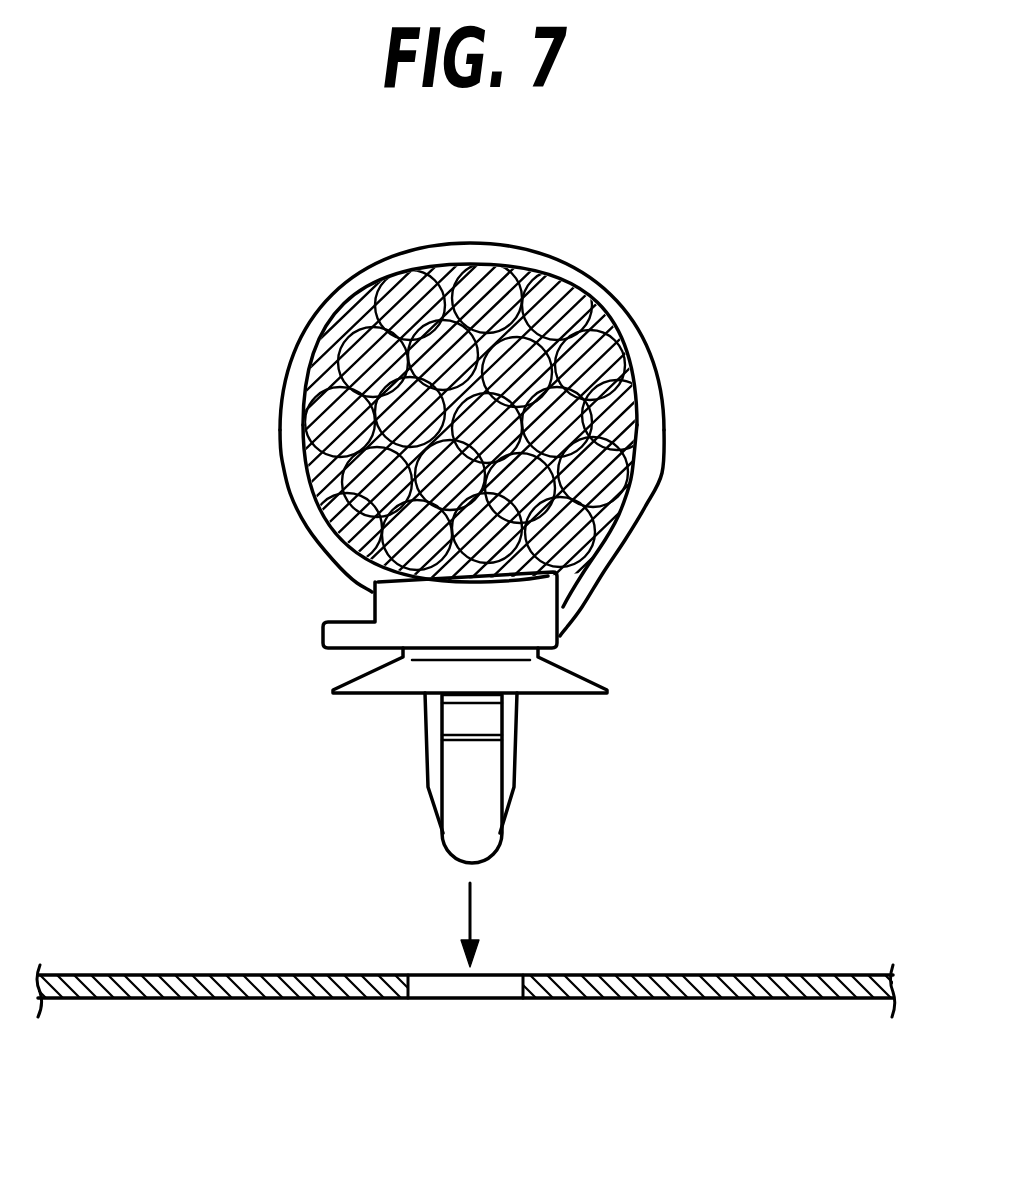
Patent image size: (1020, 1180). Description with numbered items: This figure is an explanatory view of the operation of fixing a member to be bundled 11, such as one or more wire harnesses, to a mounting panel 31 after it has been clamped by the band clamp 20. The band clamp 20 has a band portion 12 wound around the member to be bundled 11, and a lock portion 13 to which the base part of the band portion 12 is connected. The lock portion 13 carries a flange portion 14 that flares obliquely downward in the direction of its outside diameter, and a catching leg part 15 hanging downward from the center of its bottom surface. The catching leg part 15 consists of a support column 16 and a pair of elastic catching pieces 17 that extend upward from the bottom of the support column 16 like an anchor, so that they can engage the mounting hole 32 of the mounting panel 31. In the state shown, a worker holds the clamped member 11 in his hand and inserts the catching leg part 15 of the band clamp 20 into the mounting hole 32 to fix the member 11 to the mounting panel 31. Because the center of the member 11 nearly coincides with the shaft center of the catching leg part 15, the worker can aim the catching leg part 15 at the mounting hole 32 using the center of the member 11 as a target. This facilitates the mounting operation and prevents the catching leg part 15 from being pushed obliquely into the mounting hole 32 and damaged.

The member to be bundled 11 is at (537, 275).
The band portion 12 is at (295, 367).
The lock portion 13 is at (522, 622).
The flange portion 14 is at (570, 674).
The catching leg part 15 is at (417, 802).
The support column 16 is at (517, 740).
The elastic catching pieces 17 is at (477, 787).
The band clamp 20 is at (744, 504).
The mounting panel 31 is at (260, 1000).
The mounting hole 32 is at (413, 1000).